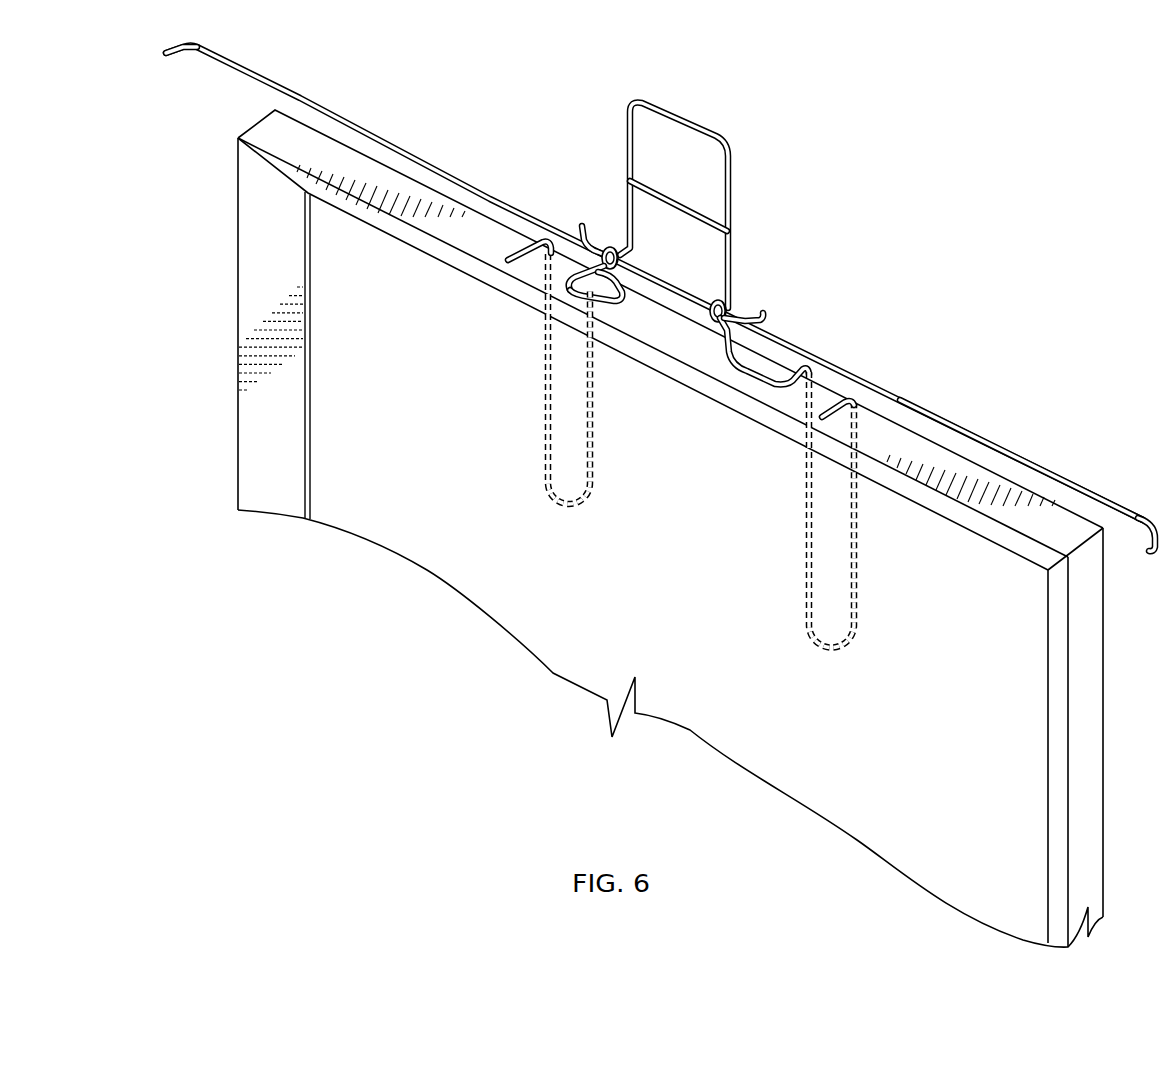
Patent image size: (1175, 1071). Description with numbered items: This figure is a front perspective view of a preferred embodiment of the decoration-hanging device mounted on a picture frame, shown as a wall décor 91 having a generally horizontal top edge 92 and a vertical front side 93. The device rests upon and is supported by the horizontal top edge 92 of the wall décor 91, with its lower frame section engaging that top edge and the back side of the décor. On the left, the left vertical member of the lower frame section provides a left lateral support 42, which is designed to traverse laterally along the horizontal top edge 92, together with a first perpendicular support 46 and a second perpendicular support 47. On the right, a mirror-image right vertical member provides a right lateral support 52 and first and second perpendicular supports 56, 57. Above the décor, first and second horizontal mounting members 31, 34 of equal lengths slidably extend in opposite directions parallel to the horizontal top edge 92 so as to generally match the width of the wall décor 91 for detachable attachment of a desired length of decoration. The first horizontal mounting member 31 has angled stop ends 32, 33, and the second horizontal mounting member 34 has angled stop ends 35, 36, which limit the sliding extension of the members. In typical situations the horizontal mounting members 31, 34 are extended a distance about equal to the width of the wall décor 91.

The first horizontal mounting member 31 is at (385, 138).
The angled stop end 32 is at (177, 57).
The angled stop end 33 is at (757, 310).
The second horizontal mounting member 34 is at (1040, 463).
The angled stop end 35 is at (583, 237).
The angled stop end 36 is at (1157, 558).
The left lateral support 42 is at (587, 283).
The first perpendicular support 46 is at (570, 253).
The second perpendicular support 47 is at (523, 265).
The right lateral support 52 is at (752, 378).
The first perpendicular support 56 is at (780, 373).
The second perpendicular support 57 is at (832, 423).
The wall décor 91 is at (228, 330).
The horizontal top edge 92 is at (1027, 517).
The vertical front side 93 is at (470, 545).